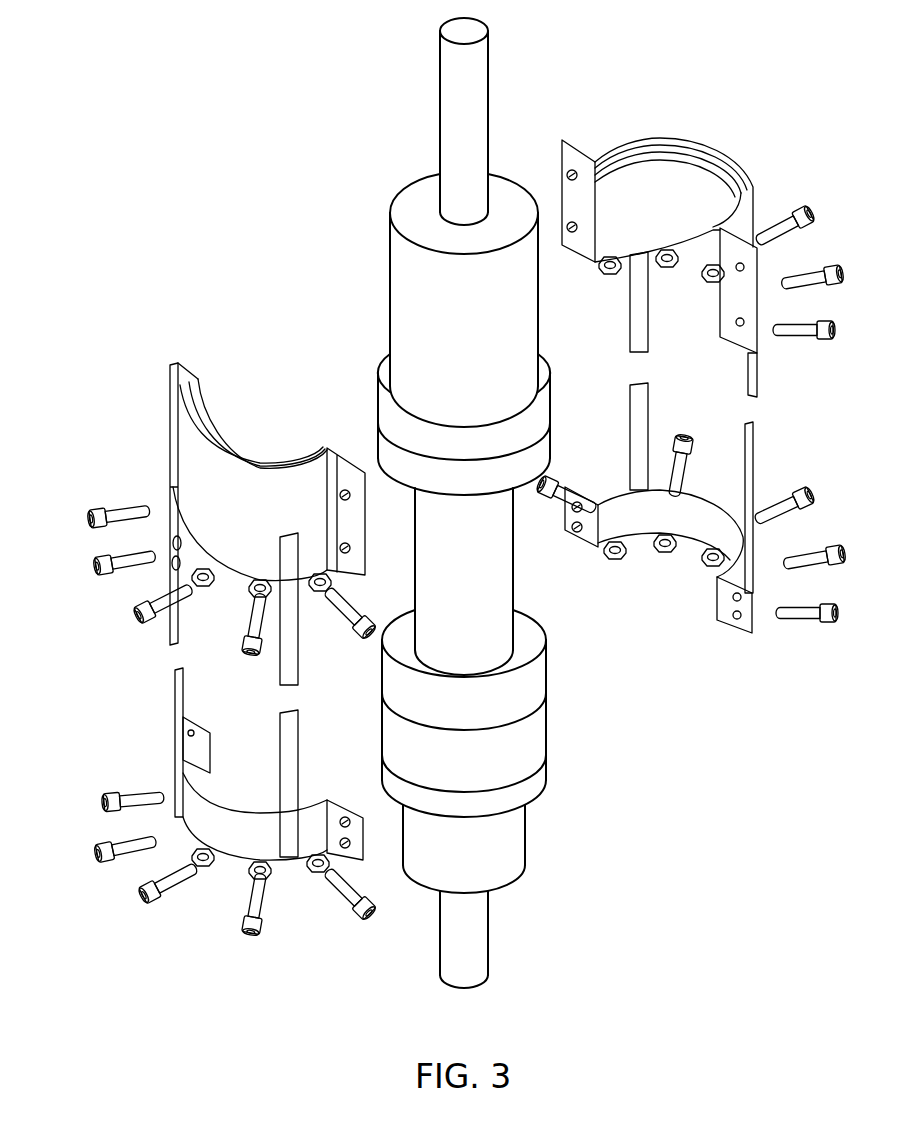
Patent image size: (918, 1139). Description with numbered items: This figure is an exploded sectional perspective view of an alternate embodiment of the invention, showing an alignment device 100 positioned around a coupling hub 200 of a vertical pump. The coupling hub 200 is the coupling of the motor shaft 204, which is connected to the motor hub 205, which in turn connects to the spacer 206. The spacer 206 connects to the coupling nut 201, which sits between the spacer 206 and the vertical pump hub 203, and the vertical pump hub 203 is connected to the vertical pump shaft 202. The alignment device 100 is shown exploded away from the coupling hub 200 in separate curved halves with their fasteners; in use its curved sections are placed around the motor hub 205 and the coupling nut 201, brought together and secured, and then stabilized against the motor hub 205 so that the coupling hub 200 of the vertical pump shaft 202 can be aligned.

The alignment device 100 is at (142, 378).
The coupling hub 200 is at (338, 230).
The coupling nut 201 is at (547, 724).
The vertical pump shaft 202 is at (488, 937).
The vertical pump hub 203 is at (525, 822).
The motor shaft 204 is at (440, 105).
The motor hub 205 is at (392, 320).
The spacer 206 is at (514, 590).